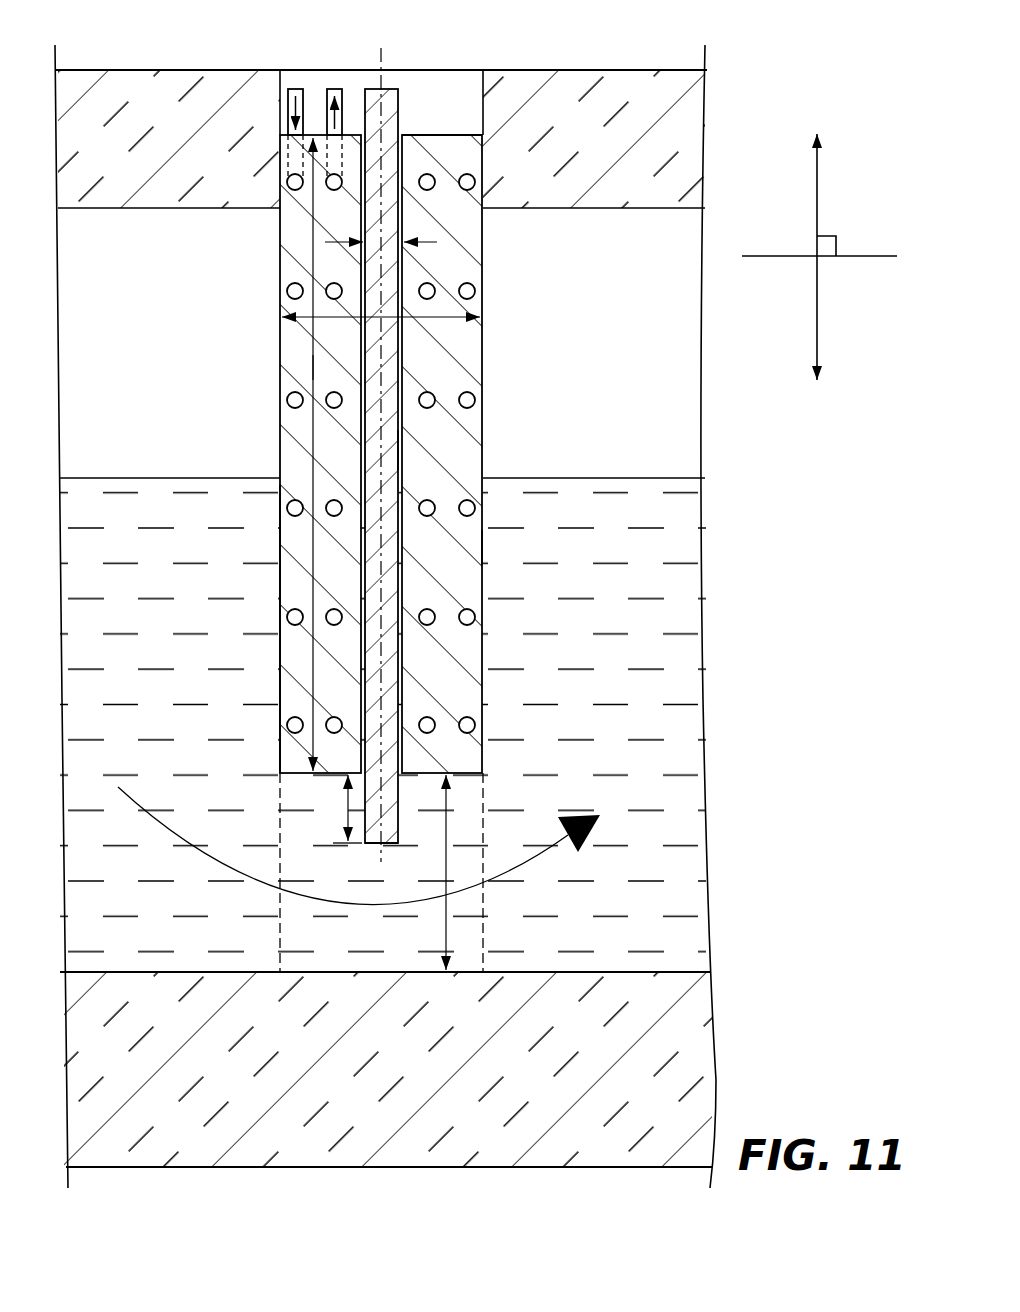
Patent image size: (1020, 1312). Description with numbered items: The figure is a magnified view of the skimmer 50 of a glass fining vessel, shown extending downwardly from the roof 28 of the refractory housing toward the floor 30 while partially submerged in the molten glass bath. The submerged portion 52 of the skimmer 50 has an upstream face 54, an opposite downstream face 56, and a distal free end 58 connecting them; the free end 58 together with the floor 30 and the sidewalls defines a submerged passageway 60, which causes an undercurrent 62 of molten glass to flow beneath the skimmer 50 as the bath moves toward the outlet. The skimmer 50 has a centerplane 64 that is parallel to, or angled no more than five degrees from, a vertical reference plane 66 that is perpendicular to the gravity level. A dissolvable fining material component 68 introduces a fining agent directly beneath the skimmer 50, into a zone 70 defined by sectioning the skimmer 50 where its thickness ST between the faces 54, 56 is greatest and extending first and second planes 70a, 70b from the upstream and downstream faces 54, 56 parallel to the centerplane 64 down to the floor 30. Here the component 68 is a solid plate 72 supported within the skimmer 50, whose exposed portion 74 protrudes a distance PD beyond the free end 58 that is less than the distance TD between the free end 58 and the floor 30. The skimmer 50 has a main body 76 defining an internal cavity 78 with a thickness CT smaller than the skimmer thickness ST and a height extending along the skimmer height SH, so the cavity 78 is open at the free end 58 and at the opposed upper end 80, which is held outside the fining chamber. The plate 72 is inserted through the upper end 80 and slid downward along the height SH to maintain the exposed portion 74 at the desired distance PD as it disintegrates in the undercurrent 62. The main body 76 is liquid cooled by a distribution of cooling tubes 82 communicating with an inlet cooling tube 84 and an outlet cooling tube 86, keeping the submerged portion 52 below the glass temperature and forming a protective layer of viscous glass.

The roof 28 is at (134, 106).
The floor 30 is at (240, 1152).
The skimmer 50 is at (278, 252).
The submerged portion 52 is at (265, 480).
The upstream face 54 is at (278, 512).
The downstream face 56 is at (484, 548).
The distal free end 58 is at (330, 774).
The submerged passageway 60 is at (316, 942).
The undercurrent 62 is at (150, 812).
The centerplane 64 is at (381, 50).
The vertical reference plane 66 is at (818, 182).
The dissolvable fining material component 68 is at (408, 432).
The zone 70 is at (428, 953).
The first plane 70a is at (278, 830).
The second plane 70b is at (485, 806).
The solid plate 72 is at (365, 92).
The exposed portion 74 is at (386, 822).
The main body 76 is at (455, 426).
The internal cavity 78 is at (392, 440).
The opposed upper end 80 is at (465, 134).
The cooling tubes 82 is at (429, 191).
The inlet cooling tube 84 is at (294, 88).
The outlet cooling tube 86 is at (333, 88).
The thickness of internal cavity CT is at (437, 243).
The thickness of skimmer ST is at (447, 319).
The height of skimmer SH is at (313, 367).
The protrusion distance PD is at (345, 810).
The distance between free end and floor TD is at (447, 915).